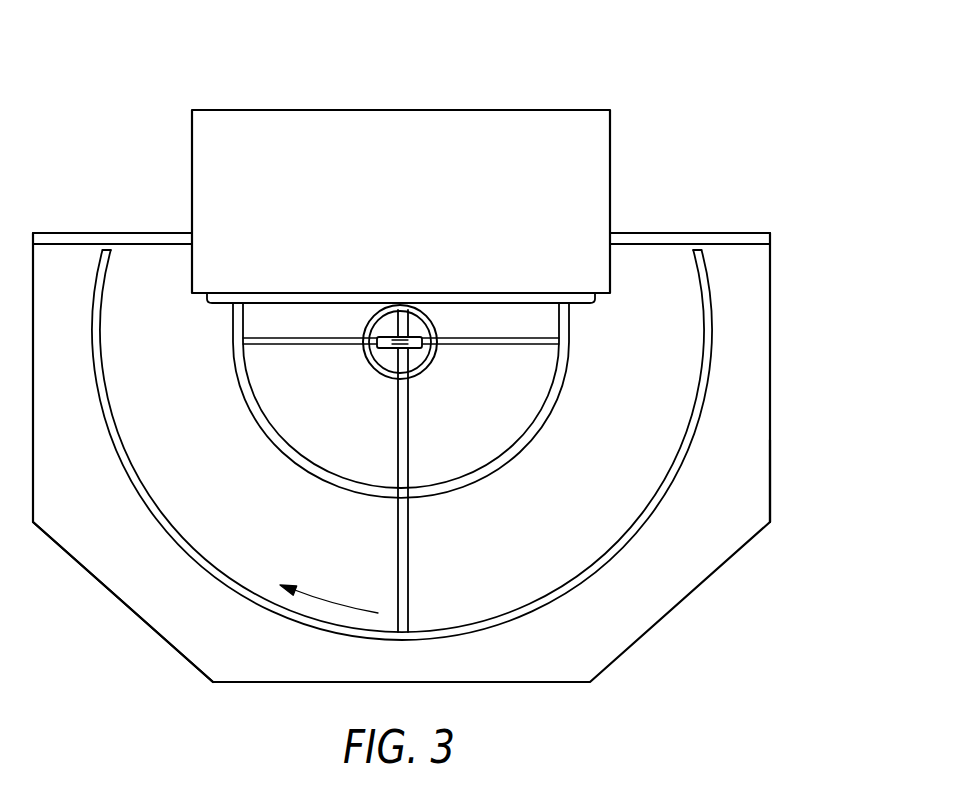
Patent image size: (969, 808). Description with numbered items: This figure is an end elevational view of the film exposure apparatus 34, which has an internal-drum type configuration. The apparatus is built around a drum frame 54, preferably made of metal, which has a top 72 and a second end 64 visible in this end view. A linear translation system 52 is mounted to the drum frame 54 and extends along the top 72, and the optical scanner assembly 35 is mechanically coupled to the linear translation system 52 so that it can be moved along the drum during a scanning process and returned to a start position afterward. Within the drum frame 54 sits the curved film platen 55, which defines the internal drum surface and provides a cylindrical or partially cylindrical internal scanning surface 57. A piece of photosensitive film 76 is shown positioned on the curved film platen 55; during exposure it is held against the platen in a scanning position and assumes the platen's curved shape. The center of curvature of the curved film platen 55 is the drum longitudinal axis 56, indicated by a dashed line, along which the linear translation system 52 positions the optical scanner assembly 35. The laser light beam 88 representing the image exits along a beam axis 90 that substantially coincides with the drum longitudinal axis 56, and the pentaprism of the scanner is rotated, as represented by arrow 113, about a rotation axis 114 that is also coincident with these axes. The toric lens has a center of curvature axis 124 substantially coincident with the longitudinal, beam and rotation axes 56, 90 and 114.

The film exposure apparatus 34 is at (112, 128).
The linear translation system 52 is at (375, 110).
The top 72 is at (673, 236).
The drum frame 54 is at (782, 424).
The second end 64 is at (753, 474).
The internal scanning surface 57 is at (705, 316).
The curved film platen 55 is at (694, 380).
The photosensitive film 76 is at (198, 556).
The optical scanner assembly 35 is at (548, 470).
The laser light beam 88 is at (410, 562).
The drum longitudinal axis 56 is at (455, 300).
The beam axis 90 is at (400, 342).
The rotation axis 114 is at (399, 342).
The center of curvature axis 124 is at (392, 338).
The arrow 113 is at (332, 602).